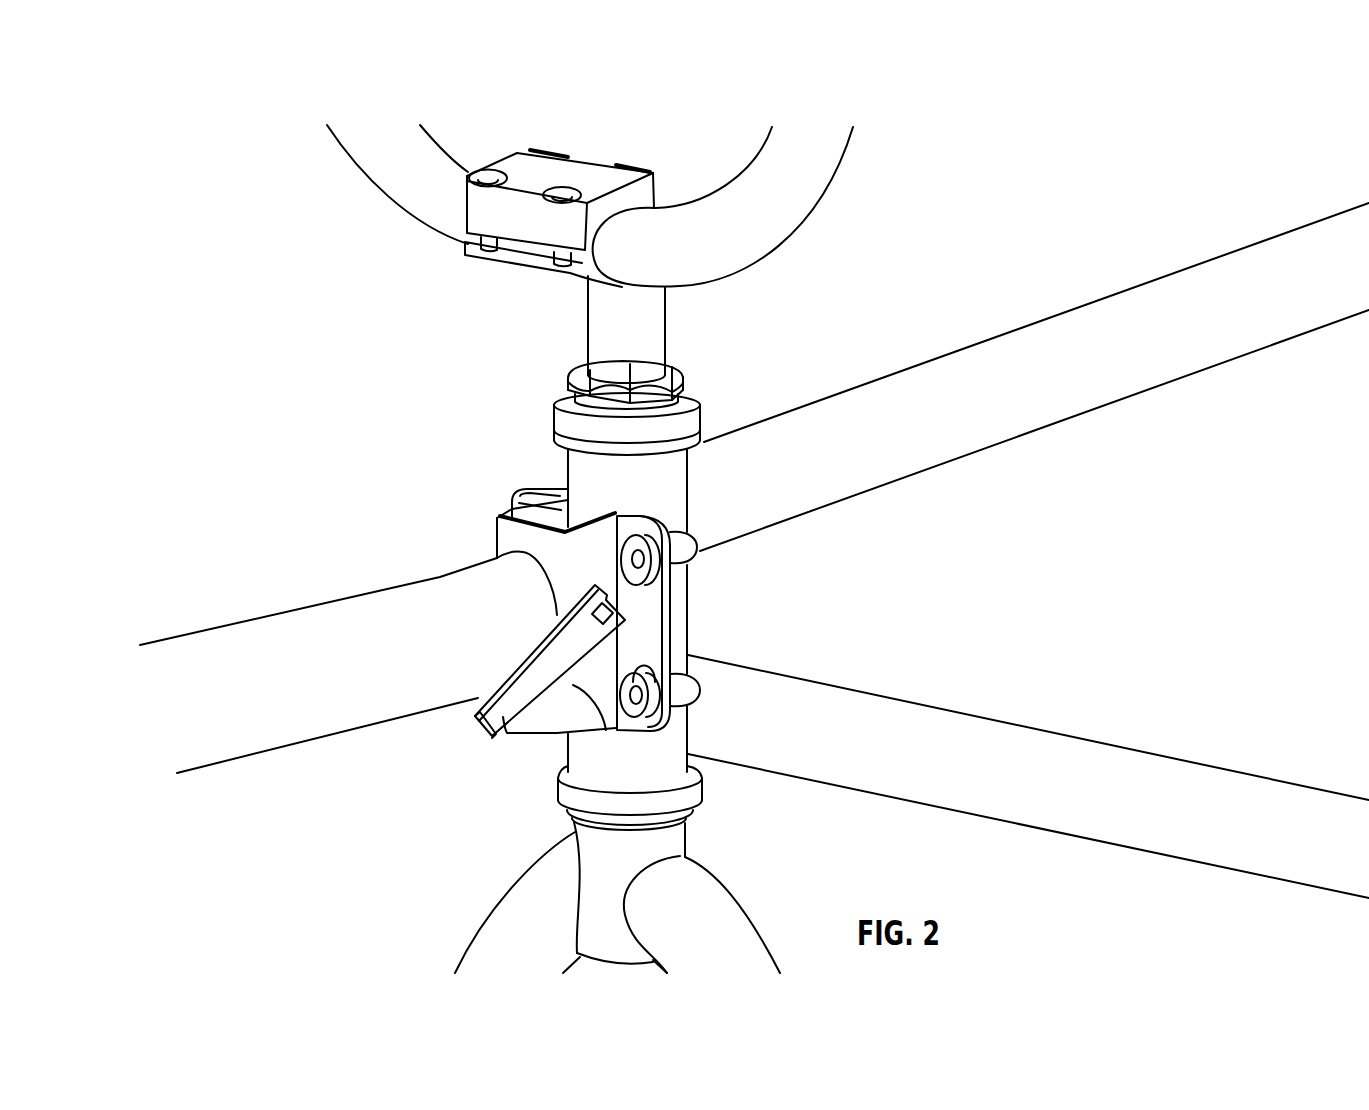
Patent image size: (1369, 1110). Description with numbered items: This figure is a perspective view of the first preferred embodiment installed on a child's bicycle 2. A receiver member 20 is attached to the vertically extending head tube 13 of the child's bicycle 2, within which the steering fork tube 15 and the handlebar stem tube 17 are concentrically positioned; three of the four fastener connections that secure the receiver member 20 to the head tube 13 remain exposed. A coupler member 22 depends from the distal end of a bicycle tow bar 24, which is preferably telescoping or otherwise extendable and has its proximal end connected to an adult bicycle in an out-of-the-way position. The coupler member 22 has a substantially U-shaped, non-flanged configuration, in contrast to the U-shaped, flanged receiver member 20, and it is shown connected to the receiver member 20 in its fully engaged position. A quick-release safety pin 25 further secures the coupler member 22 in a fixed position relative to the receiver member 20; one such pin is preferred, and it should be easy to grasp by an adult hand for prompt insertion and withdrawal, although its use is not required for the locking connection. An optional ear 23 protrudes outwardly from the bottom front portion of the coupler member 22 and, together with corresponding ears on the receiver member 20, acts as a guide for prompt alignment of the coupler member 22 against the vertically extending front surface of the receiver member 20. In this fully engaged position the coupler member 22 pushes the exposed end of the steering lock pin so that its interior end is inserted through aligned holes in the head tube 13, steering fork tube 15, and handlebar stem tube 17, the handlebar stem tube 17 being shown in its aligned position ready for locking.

The child's bicycle 2 is at (934, 363).
The head tube 13 is at (593, 487).
The steering fork tube 15 is at (588, 828).
The handlebar stem tube 17 is at (630, 337).
The receiver member 20 is at (640, 622).
The coupler member 22 is at (510, 545).
The ear 23 is at (587, 720).
The bicycle tow bar 24 is at (328, 632).
The quick-release safety pin 25 is at (475, 725).